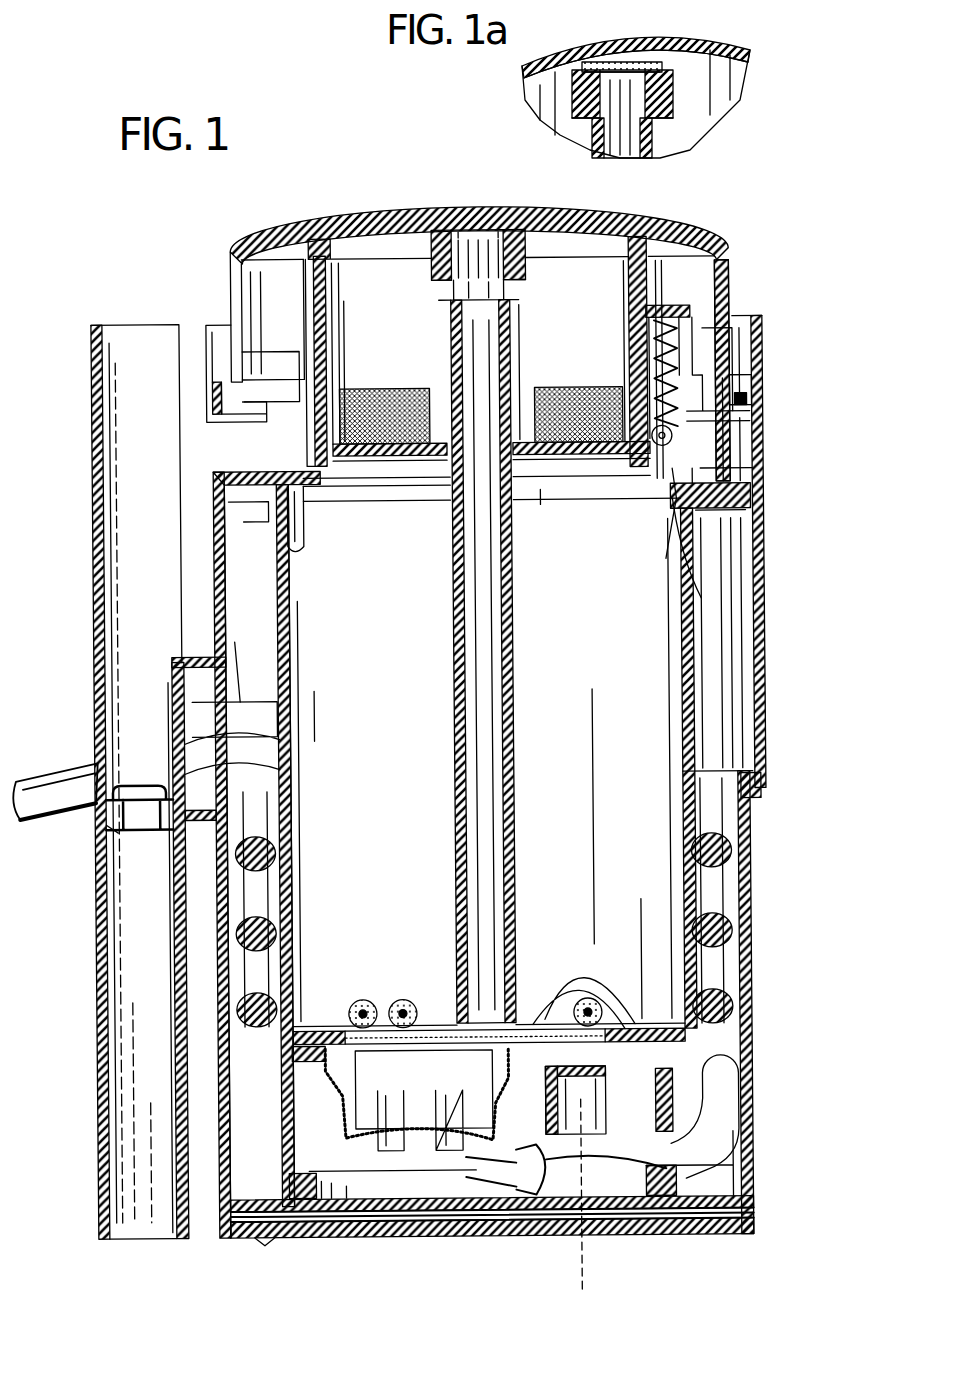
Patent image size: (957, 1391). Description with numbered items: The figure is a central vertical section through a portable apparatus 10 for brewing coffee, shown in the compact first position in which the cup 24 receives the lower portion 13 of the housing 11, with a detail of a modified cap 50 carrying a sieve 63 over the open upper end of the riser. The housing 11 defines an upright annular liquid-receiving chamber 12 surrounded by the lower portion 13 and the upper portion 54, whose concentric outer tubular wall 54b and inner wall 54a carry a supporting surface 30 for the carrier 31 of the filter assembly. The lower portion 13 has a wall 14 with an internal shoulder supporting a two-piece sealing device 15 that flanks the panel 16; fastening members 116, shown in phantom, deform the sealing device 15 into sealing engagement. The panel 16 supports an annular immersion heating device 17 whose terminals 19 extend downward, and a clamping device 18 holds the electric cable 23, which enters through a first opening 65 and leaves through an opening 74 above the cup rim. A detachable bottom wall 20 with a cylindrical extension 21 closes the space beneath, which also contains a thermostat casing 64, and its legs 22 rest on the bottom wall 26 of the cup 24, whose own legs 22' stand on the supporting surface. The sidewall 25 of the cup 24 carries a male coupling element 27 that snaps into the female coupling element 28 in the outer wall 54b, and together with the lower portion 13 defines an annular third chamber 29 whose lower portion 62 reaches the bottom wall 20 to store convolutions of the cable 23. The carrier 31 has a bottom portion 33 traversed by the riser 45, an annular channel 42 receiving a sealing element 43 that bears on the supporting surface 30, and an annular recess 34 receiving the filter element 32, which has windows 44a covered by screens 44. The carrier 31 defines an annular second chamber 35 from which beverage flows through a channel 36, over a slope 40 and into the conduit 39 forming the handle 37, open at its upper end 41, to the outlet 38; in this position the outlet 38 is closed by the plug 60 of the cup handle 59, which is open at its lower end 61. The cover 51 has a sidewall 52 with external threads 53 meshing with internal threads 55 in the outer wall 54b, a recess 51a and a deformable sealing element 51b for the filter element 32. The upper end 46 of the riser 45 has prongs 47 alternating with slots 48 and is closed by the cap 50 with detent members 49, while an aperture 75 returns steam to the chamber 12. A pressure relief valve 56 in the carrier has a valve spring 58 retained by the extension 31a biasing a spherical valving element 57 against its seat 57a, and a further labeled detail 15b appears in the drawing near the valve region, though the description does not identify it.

In FIG. 1, the portable apparatus 10 is at (727, 196).
In FIG. 1, the housing 11 is at (772, 470).
In FIG. 1, the liquid-receiving chamber 12 is at (622, 684).
In FIG. 1, the lower portion of housing 13 is at (717, 1236).
In FIG. 1, the wall 14 is at (700, 1085).
In FIG. 1, the sealing device 15 is at (690, 1024).
In FIG. 1, the ball 15b is at (672, 430).
In FIG. 1, the panel 16 is at (673, 768).
In FIG. 1, the heating device 17 is at (428, 975).
In FIG. 1, the clamping device 18 is at (533, 1126).
In FIG. 1, the terminals 19 is at (598, 1208).
In FIG. 1, the bottom wall 20 is at (674, 1220).
In FIG. 1, the cylindrical extension 21 is at (322, 1214).
In FIG. 1, the legs 22 is at (248, 1279).
In FIG. 1, the legs of cup bottom wall 22' is at (213, 1280).
In FIG. 1, the electric cable 23 is at (62, 818).
In FIG. 1, the cup 24 is at (770, 978).
In FIG. 1, the sidewall of cup 25 is at (752, 920).
In FIG. 1, the bottom wall of cup 26 is at (442, 1216).
In FIG. 1, the male coupling element 27 is at (752, 770).
In FIG. 1, the female coupling element 28 is at (760, 798).
In FIG. 1, the third chamber 29 is at (708, 897).
In FIG. 1, the supporting surface 30 is at (740, 490).
In FIG. 1, the carrier 31 is at (562, 480).
In FIG. 1, the extension of carrier 31a is at (665, 340).
In FIG. 1, the filter element 32 is at (339, 300).
In FIG. 1, the bottom portion of carrier 33 is at (402, 505).
In FIG. 1, the annular recess 34 is at (330, 500).
In FIG. 1, the second chamber 35 is at (285, 400).
In FIG. 1, the channel 36 is at (256, 456).
In FIG. 1, the handle 37 is at (130, 440).
In FIG. 1, the outlet 38 is at (100, 830).
In FIG. 1, the conduit 39 is at (92, 640).
In FIG. 1, the slope 40 is at (190, 640).
In FIG. 1, the upper end of handle 41 is at (138, 322).
In FIG. 1, the annular channel 42 is at (244, 510).
In FIG. 1, the sealing element 43 is at (300, 545).
In FIG. 1, the screens 44 is at (392, 400).
In FIG. 1, the windows 44a is at (348, 292).
In FIG. 1, the riser 45 is at (522, 864).
In FIG. 1, the upper end of riser 46 is at (536, 304).
In FIG. 1, the prongs 47 is at (445, 292).
In FIG. 1, the slots 48 is at (508, 290).
In FIG. 1, the detent members 49 is at (520, 262).
In FIG. 1a, the cap 50 is at (572, 96).
In FIG. 1, the cap 50 is at (440, 232).
In FIG. 1, the cover 51 is at (307, 240).
In FIG. 1, the recess of cover 51a is at (640, 238).
In FIG. 1, the deformable sealing element 51b is at (320, 238).
In FIG. 1, the sidewall of cover 52 is at (712, 252).
In FIG. 1, the external threads 53 is at (752, 395).
In FIG. 1, the upper portion of housing 54 is at (765, 348).
In FIG. 1, the inner wall 54a is at (685, 540).
In FIG. 1, the outer tubular wall 54b is at (752, 576).
In FIG. 1, the internal threads 55 is at (745, 404).
In FIG. 1, the pressure relief valve 56 is at (700, 310).
In FIG. 1, the valving element 57 is at (672, 470).
In FIG. 1, the seat 57a is at (680, 560).
In FIG. 1, the valve spring 58 is at (740, 330).
In FIG. 1, the handle of cup 59 is at (84, 1030).
In FIG. 1, the plug 60 is at (140, 790).
In FIG. 1, the open lower end of handle 61 is at (140, 1228).
In FIG. 1, the lower portion of third chamber 62 is at (710, 1165).
In FIG. 1a, the sieve 63 is at (640, 70).
In FIG. 1, the casing 64 is at (364, 1150).
In FIG. 1, the first opening 65 is at (690, 1195).
In FIG. 1, the opening 74 is at (235, 722).
In FIG. 1, the aperture 75 is at (550, 480).
In FIG. 1, the fastening members 116 is at (332, 1065).